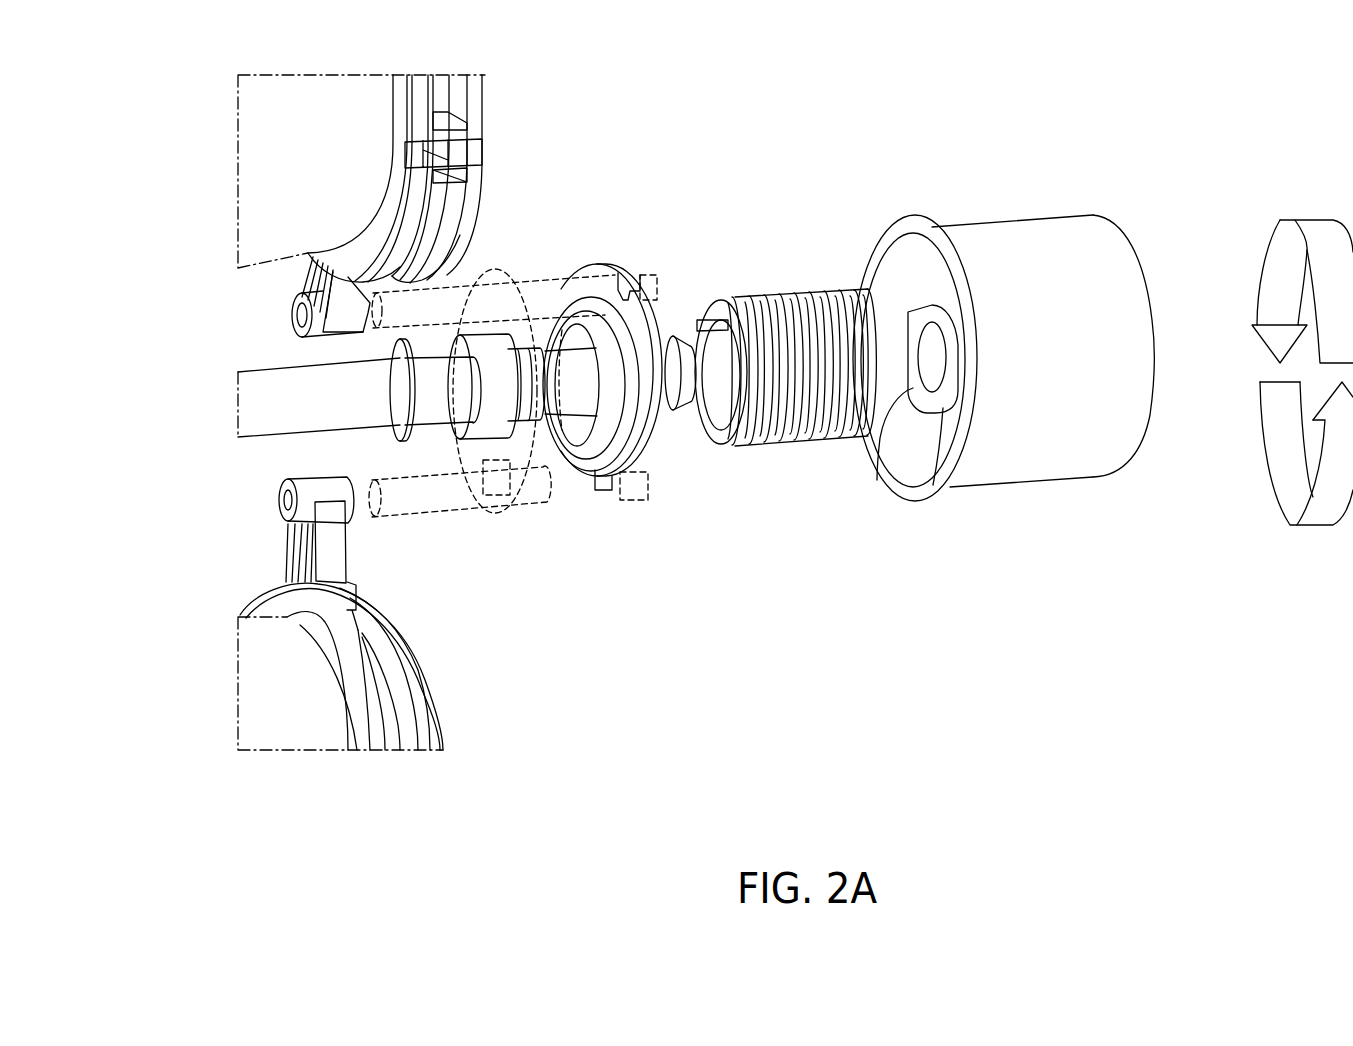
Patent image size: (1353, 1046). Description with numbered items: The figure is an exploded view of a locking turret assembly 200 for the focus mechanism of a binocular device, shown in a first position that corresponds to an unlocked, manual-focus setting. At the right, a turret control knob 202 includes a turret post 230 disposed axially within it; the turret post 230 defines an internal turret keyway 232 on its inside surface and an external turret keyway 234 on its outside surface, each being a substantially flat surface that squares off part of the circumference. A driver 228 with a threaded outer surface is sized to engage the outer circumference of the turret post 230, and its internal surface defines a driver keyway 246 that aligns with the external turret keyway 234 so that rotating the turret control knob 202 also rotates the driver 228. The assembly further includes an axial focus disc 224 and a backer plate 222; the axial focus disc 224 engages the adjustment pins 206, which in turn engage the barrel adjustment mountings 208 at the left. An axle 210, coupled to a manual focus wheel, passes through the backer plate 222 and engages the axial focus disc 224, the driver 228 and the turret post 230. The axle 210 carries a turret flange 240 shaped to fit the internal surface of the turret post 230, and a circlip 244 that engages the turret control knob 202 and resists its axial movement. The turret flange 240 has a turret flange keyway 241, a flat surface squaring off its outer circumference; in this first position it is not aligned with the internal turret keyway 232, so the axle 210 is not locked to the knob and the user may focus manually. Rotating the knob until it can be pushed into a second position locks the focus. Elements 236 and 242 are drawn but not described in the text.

The turret assembly 200 is at (731, 60).
The turret control knob 202 is at (1140, 297).
The adjustment pins 206 is at (545, 292).
The barrel adjustment mountings 208 is at (277, 500).
The axle 210 is at (272, 388).
The backer plate 222 is at (583, 458).
The axial focus disc 224 is at (620, 273).
The driver 228 is at (770, 293).
The turret post 230 is at (863, 437).
The internal turret keyway 232 is at (933, 493).
The external turret keyway 234 is at (922, 308).
The cylindrical hub 236 is at (500, 423).
The turret flange 240 is at (542, 393).
The turret flange keyway 241 is at (528, 347).
The flange disc 242 is at (390, 443).
The circlip 244 is at (690, 415).
The driver keyway 246 is at (702, 303).